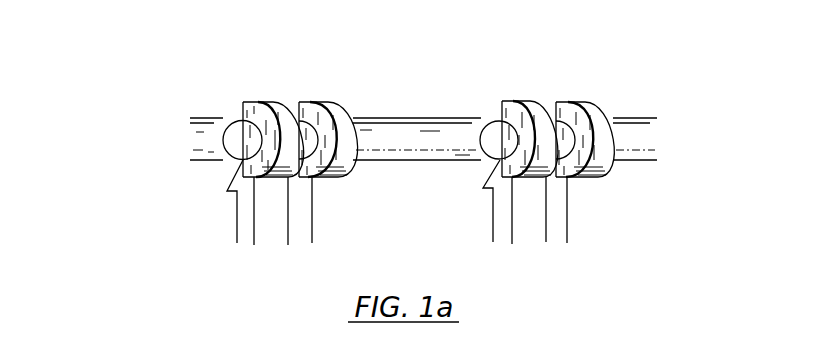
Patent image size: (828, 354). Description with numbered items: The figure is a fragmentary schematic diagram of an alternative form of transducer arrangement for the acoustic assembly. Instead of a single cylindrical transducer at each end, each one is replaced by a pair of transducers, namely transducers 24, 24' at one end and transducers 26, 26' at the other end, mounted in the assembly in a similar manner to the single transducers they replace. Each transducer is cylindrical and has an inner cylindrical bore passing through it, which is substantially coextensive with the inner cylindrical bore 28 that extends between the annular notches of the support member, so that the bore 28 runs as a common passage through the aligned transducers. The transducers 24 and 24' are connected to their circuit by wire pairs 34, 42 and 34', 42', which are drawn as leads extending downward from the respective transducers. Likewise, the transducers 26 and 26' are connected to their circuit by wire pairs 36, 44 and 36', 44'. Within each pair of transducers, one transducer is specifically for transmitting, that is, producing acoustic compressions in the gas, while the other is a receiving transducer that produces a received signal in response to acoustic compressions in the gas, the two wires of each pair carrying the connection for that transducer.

The transducer 24 is at (273, 112).
The transducer 24' is at (328, 112).
The transducer 26 is at (530, 112).
The transducer 26' is at (585, 112).
The inner cylindrical bore 28 is at (389, 148).
The wire 34 is at (222, 201).
The wire 34' is at (307, 228).
The wire 36 is at (481, 201).
The wire 36' is at (565, 228).
The wire 42 is at (228, 227).
The wire 42' is at (334, 210).
The wire 44 is at (489, 228).
The wire 44' is at (590, 210).